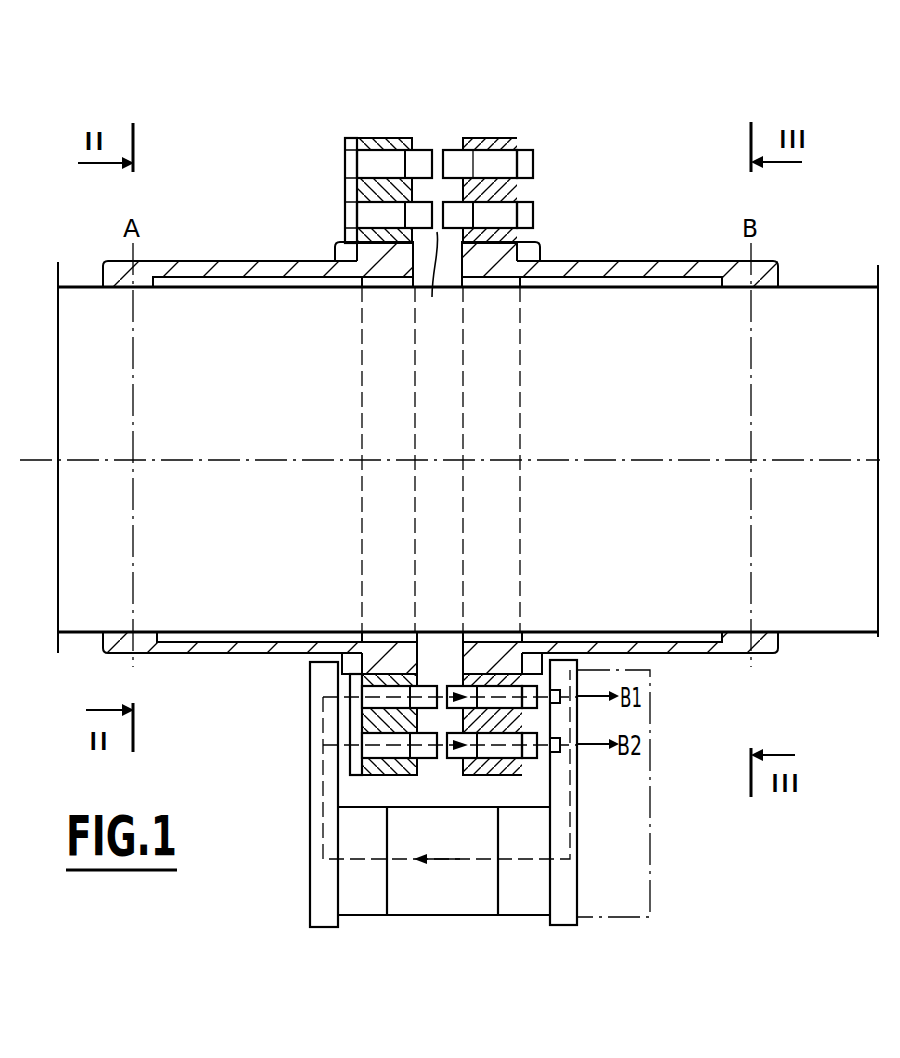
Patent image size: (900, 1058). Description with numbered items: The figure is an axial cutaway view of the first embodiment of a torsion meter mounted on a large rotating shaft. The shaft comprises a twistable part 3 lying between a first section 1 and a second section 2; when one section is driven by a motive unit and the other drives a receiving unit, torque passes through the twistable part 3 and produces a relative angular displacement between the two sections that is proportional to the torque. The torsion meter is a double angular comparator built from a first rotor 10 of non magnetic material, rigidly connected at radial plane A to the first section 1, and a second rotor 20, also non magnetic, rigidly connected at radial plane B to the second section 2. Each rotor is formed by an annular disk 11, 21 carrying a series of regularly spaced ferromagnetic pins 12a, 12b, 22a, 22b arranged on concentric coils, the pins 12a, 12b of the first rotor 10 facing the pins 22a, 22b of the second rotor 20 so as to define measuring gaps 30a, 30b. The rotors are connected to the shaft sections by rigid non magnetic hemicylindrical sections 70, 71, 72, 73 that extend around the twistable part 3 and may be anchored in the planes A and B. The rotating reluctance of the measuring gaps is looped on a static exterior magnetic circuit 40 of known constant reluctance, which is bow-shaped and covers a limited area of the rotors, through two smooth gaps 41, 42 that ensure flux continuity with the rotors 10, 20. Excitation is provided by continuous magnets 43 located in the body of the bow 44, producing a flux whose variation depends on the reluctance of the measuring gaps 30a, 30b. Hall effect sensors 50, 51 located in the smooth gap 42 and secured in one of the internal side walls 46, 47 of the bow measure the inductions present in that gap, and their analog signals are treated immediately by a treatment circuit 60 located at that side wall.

The first section 1 is at (107, 588).
The second section 2 is at (817, 612).
The twistable part 3 is at (628, 439).
The first rotor 10 is at (347, 155).
The annular disk 11 is at (367, 142).
The ferromagnetic pin 12a is at (348, 158).
The ferromagnetic pin 12b is at (348, 215).
The second rotor 20 is at (529, 155).
The annular disk 21 is at (513, 195).
The ferromagnetic pin 22a is at (520, 162).
The ferromagnetic pin 22b is at (522, 220).
The measuring gap 30a is at (437, 160).
The measuring gap 30b is at (439, 314).
The exterior magnetic circuit 40 is at (446, 809).
The smooth gap 41 is at (345, 716).
The smooth gap 42 is at (540, 752).
The continuous magnet 43 is at (470, 897).
The bow 44 is at (352, 875).
The internal side wall 46 is at (328, 760).
The internal side wall 47 is at (563, 894).
The Hall effect sensor 50 is at (555, 693).
The Hall effect sensor 51 is at (557, 752).
The treatment circuit 60 is at (652, 855).
The hemicylindrical section 70 is at (225, 262).
The hemicylindrical section 71 is at (223, 648).
The hemicylindrical section 72 is at (643, 258).
The hemicylindrical section 73 is at (692, 648).